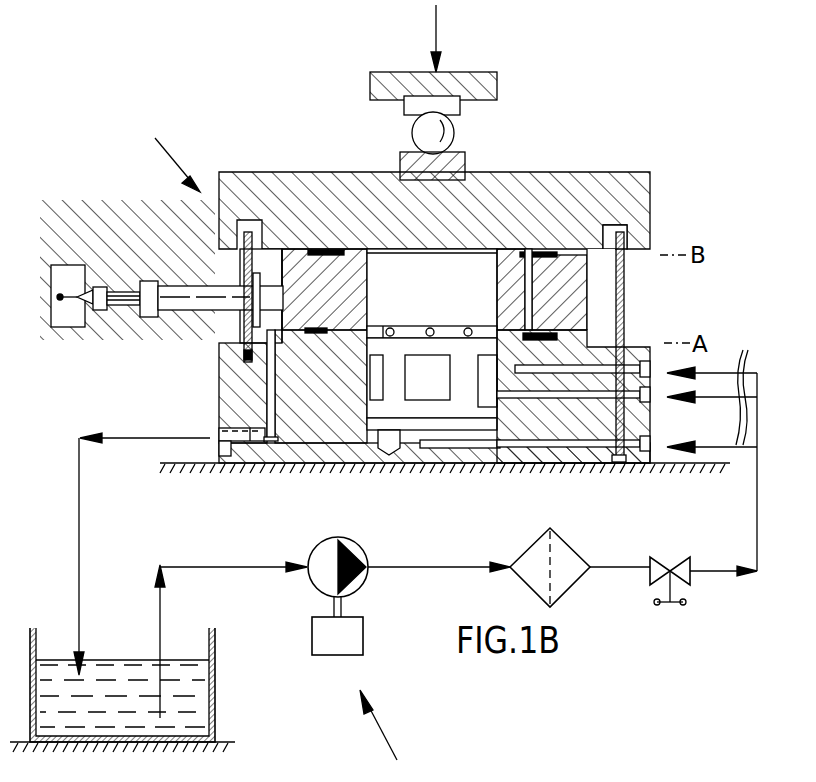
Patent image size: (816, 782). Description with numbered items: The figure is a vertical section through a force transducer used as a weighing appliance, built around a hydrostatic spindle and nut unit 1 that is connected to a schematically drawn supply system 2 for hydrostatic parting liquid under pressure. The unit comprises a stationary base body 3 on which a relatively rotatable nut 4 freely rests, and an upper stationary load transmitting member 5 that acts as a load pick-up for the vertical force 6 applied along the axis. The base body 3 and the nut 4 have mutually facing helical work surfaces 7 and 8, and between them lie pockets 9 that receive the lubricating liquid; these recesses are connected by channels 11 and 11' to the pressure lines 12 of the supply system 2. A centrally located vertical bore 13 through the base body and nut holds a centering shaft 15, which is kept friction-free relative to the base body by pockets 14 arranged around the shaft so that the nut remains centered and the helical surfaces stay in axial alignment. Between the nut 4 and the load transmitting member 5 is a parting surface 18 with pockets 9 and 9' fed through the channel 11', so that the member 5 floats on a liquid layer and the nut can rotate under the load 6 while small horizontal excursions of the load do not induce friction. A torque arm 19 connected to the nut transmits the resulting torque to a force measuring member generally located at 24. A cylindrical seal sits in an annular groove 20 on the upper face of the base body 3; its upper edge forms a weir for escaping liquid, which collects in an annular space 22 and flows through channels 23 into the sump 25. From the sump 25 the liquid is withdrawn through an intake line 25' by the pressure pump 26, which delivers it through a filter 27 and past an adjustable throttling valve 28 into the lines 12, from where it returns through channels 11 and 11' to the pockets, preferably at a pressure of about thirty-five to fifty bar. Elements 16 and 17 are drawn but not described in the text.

The hydrostatic spindle and nut unit 1 is at (170, 152).
The supply system 2 is at (380, 727).
The base body 3 is at (218, 382).
The nut 4 is at (297, 250).
The load transmitting member 5 is at (645, 192).
The vertical force 6 is at (440, 22).
The work surface of base body 7 is at (598, 337).
The work surface of nut 8 is at (560, 330).
The pockets 9 is at (434, 291).
The pocket 9' is at (402, 269).
The channel 11 is at (573, 396).
The channel 11' is at (517, 271).
The pressure lines 12 is at (712, 388).
The vertical bore 13 is at (372, 262).
The pockets 14 is at (417, 358).
The centering shaft 15 is at (472, 255).
The right bolt 16 is at (585, 270).
The bolt head recess 17 is at (586, 240).
The parting surface 18 is at (350, 248).
The torque arm 19 is at (147, 285).
The annular groove 20 is at (243, 355).
The annular space 22 is at (250, 340).
The channels 23 is at (273, 412).
The force measuring member 24 is at (78, 278).
The sump 25 is at (140, 690).
The intake line 25' is at (231, 640).
The pressure pump 26 is at (322, 559).
The filter 27 is at (530, 562).
The throttling valve 28 is at (683, 562).